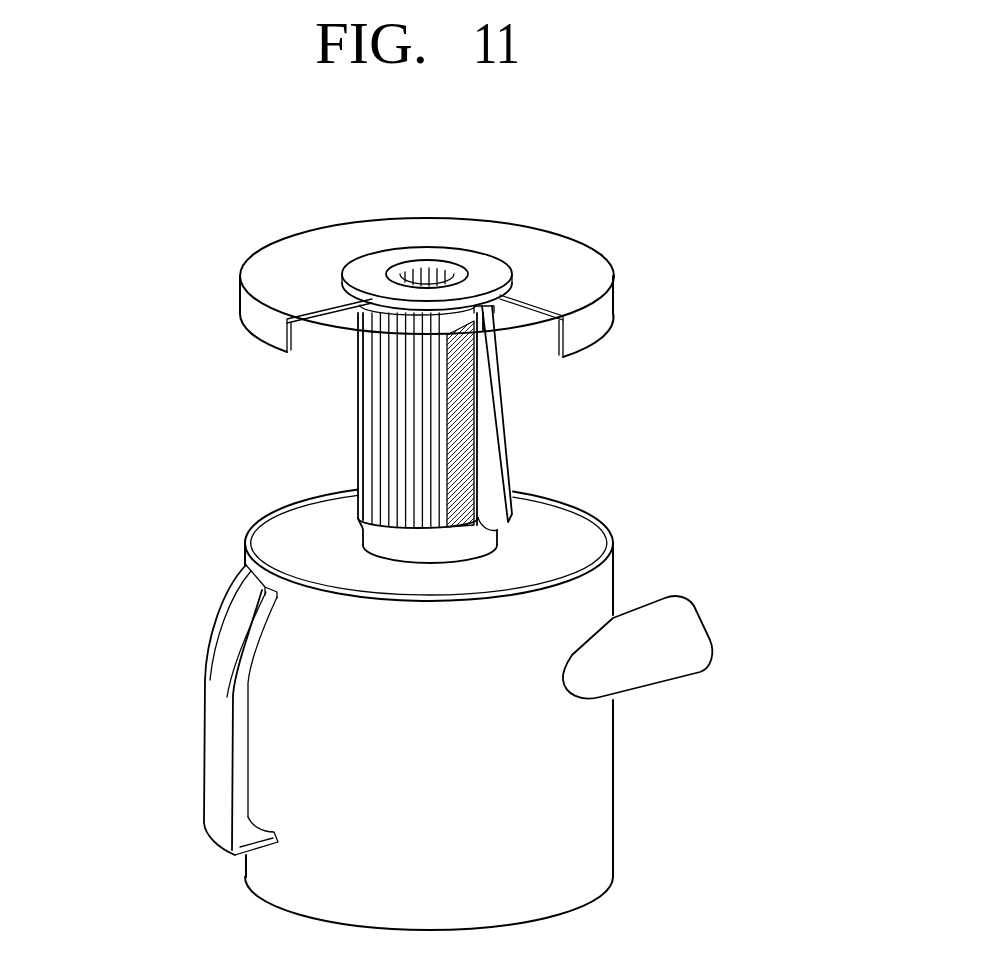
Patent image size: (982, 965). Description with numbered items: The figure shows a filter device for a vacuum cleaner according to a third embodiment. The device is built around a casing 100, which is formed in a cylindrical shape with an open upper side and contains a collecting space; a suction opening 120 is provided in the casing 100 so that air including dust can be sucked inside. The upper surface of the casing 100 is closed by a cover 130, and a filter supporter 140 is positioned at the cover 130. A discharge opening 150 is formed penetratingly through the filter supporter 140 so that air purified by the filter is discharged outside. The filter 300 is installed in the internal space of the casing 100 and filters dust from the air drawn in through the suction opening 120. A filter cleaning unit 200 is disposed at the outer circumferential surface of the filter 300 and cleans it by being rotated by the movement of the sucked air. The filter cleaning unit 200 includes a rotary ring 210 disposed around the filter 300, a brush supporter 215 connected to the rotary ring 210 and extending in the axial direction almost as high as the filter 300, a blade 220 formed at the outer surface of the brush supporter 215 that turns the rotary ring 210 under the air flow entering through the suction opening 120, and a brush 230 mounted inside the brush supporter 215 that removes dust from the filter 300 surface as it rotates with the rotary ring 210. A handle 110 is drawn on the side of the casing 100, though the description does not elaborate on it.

The casing 100 is at (622, 592).
The handle 110 is at (217, 750).
The suction opening 120 is at (688, 641).
The cover 130 is at (503, 229).
The filter supporter 140 is at (483, 280).
The discharge opening 150 is at (447, 265).
The filter cleaning unit 200 is at (308, 416).
The rotary ring 210 is at (407, 308).
The brush supporter 215 is at (487, 504).
The blade 220 is at (493, 438).
The brush 230 is at (450, 393).
The filter 300 is at (380, 477).